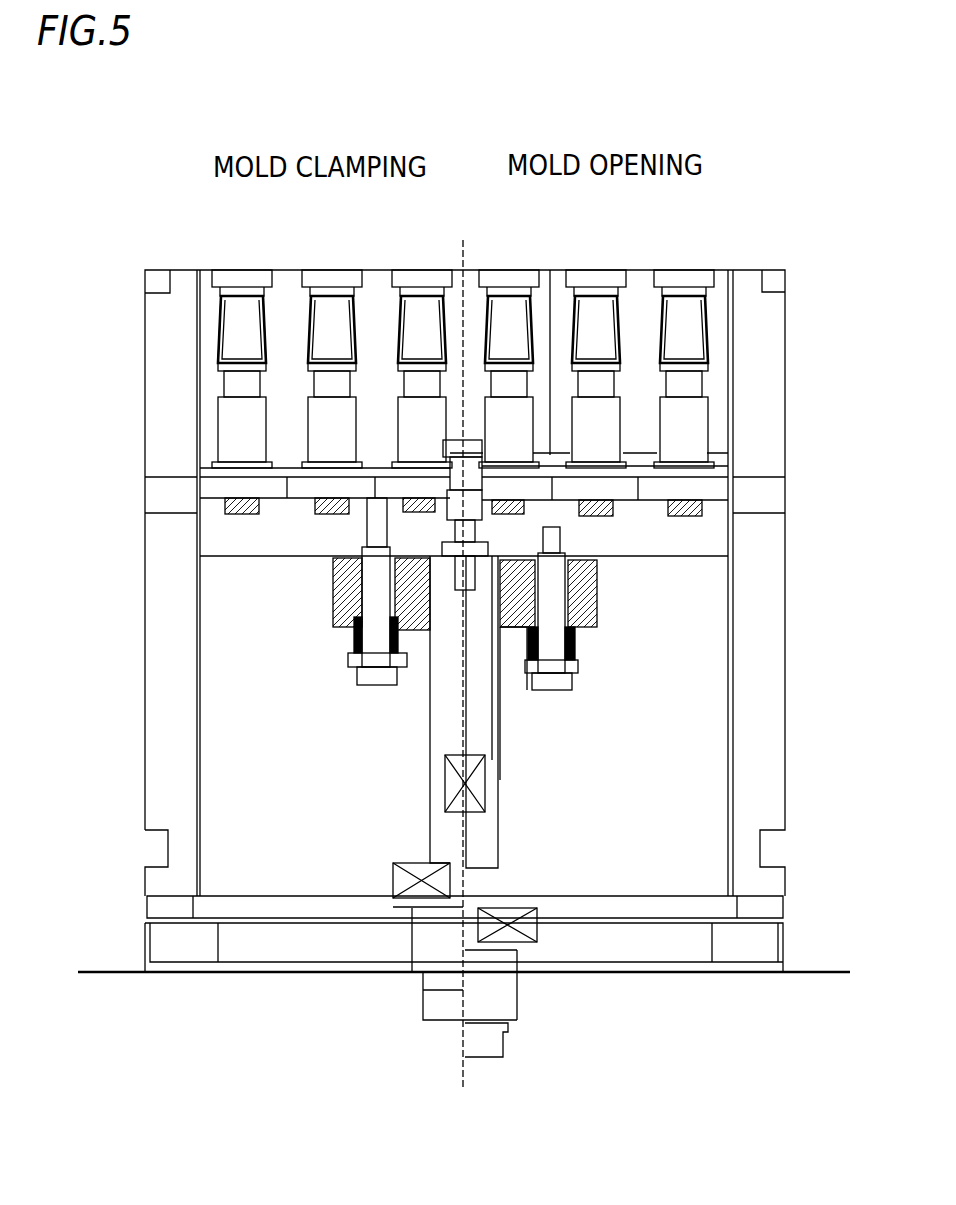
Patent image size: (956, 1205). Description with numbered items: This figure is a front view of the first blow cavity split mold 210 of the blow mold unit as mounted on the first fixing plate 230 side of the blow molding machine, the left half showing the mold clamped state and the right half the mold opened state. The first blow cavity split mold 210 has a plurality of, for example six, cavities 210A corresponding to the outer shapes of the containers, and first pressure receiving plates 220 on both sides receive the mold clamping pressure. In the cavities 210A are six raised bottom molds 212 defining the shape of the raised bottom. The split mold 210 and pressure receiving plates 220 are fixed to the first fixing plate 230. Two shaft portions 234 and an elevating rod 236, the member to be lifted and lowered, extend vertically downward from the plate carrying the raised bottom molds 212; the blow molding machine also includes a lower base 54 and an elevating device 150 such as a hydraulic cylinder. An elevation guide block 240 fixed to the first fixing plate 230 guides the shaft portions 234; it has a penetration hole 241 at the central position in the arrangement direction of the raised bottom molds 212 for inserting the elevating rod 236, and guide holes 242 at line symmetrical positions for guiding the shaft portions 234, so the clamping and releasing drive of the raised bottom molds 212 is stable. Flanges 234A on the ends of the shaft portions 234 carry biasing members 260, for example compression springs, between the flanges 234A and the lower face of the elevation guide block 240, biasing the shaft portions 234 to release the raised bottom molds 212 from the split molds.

The lower base 54 is at (103, 967).
The elevating device 150 is at (395, 872).
The first blow cavity split mold 210 is at (508, 341).
The cavity 210A is at (697, 327).
The raised bottom mold 212 is at (223, 380).
The first pressure receiving plate 220 is at (152, 598).
The first fixing plate 230 is at (240, 768).
The shaft portion 234 is at (370, 608).
The flange 234A is at (353, 660).
The elevating rod 236 is at (430, 768).
The elevation guide block 240 is at (597, 603).
The penetration hole 241 is at (502, 633).
The guide hole 242 is at (357, 572).
The biasing member 260 is at (355, 637).